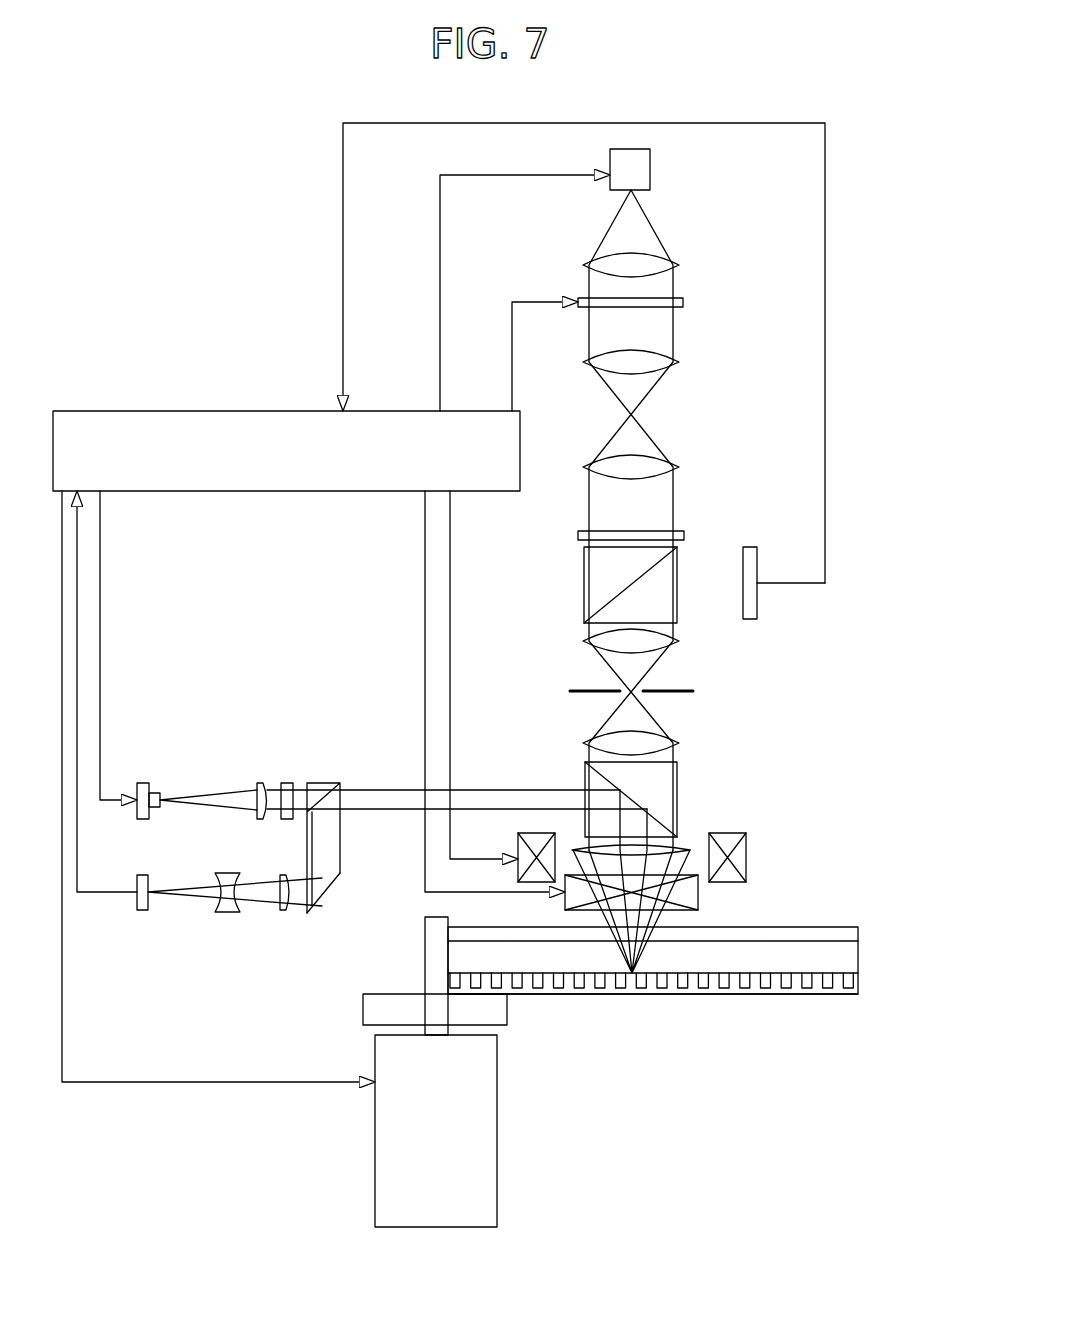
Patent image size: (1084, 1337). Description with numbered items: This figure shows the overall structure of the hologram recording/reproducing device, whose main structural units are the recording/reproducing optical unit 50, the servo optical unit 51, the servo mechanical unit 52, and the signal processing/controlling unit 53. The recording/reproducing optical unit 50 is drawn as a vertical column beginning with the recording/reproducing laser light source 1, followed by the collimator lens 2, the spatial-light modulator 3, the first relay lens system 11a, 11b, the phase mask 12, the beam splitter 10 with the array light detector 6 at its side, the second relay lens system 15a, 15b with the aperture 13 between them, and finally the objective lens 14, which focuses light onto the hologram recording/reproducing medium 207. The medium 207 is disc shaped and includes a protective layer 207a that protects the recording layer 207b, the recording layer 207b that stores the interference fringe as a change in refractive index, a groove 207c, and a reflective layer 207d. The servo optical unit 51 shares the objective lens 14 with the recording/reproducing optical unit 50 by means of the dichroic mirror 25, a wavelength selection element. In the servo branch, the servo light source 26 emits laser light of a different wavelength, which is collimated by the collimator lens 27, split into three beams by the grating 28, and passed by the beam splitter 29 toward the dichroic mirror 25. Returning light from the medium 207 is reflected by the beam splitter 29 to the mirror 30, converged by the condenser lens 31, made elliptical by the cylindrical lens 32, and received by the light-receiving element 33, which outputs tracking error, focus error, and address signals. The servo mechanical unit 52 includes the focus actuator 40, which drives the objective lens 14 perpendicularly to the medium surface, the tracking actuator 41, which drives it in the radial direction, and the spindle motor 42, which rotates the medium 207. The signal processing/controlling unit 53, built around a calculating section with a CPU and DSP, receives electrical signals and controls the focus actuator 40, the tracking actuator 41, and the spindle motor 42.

The recording/reproducing laser light source 1 is at (650, 173).
The collimator lens 2 is at (679, 265).
The spatial-light modulator 3 is at (683, 302).
The array light detector 6 is at (749, 619).
The beam splitter 10 is at (584, 585).
The first relay lens system 11a is at (585, 365).
The first relay lens system 11b is at (585, 470).
The phase mask 12 is at (684, 535).
The aperture 13 is at (693, 691).
The objective lens 14 is at (688, 848).
The second relay lens system 15a is at (585, 644).
The second relay lens system 15b is at (585, 740).
The dichroic mirror 25 is at (677, 775).
The servo light source 26 is at (143, 783).
The collimator lens 27 is at (260, 783).
The grating 28 is at (287, 783).
The beam splitter 29 is at (323, 783).
The mirror 30 is at (325, 890).
The condenser lens 31 is at (285, 910).
The cylindrical lens 32 is at (227, 912).
The light-receiving element 33 is at (143, 910).
The focus actuator 40 is at (518, 846).
The tracking actuator 41 is at (698, 898).
The spindle motor 42 is at (497, 1132).
The recording/reproducing optical unit 50 is at (680, 428).
The servo optical unit 51 is at (330, 710).
The servo mechanical unit 52 is at (745, 820).
The signal processing/controlling unit 53 is at (128, 418).
The hologram recording/reproducing medium 207 is at (697, 944).
The protective layer 207a is at (858, 931).
The recording layer 207b is at (858, 957).
The groove 207c is at (858, 980).
The reflective layer 207d is at (858, 993).